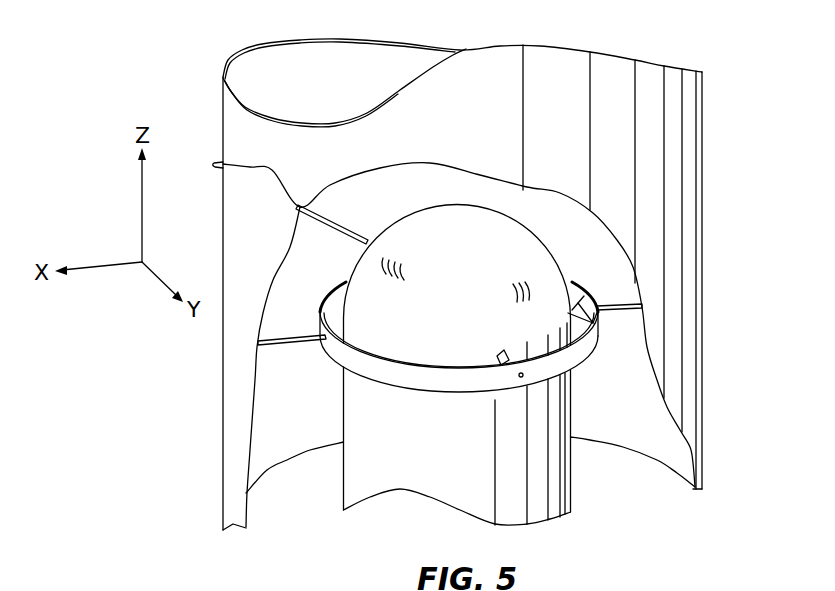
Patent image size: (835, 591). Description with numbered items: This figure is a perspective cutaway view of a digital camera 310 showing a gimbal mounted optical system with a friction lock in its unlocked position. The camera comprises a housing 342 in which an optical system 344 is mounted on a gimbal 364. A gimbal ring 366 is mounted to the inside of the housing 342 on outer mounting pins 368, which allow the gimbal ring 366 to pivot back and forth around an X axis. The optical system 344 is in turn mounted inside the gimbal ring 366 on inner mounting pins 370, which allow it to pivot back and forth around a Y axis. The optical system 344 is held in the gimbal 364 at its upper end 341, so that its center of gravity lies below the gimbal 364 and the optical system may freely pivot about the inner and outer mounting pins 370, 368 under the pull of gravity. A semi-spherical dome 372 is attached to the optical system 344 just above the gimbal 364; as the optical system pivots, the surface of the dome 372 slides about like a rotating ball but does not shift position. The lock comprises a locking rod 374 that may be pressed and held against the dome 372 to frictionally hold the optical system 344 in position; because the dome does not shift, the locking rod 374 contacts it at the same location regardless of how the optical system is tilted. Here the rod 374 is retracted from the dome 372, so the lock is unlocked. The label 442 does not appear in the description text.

The digital camera 310 is at (711, 40).
The housing 342 is at (703, 153).
The optical system 344 is at (571, 488).
The locking rod 374 is at (299, 206).
The outer mounting pins 368 is at (288, 338).
The semi-spherical dome 372 is at (477, 264).
The upper end 341 is at (568, 308).
The gimbal ring 366 is at (408, 362).
The inner mounting pins 370 is at (496, 351).
The gimbal 364 is at (409, 412).
The reference label 442 is at (115, 580).